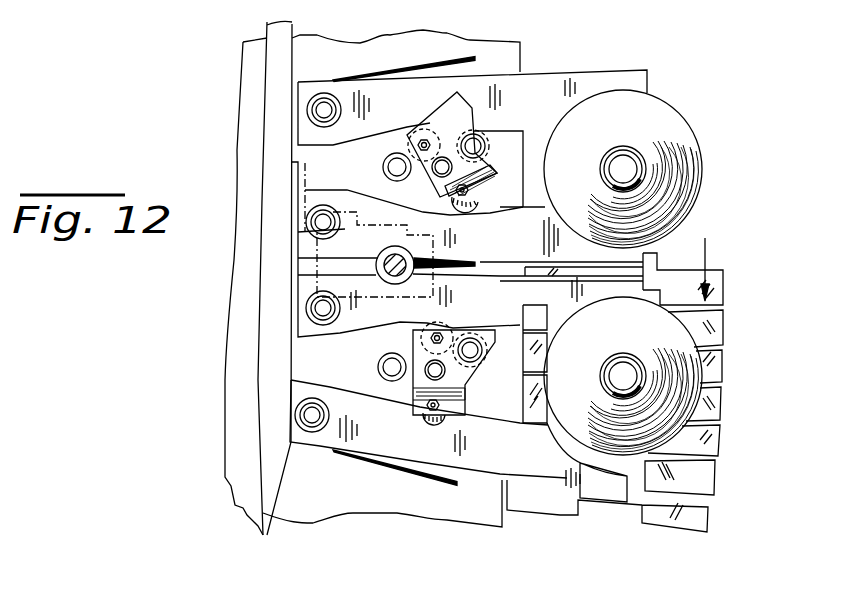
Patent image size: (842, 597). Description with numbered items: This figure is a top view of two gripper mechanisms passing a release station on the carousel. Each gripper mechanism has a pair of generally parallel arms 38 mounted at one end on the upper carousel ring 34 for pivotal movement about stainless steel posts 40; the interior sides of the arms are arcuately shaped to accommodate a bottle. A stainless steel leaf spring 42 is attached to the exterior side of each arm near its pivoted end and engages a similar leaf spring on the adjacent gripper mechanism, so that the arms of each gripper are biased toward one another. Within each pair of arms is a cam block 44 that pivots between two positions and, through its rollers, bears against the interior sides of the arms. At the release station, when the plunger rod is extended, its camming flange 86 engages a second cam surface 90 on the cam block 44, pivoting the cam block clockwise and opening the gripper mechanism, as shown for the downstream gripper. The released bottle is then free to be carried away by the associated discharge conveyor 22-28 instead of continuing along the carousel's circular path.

The upper carousel ring 34 is at (478, 515).
The arms 38 is at (640, 81).
The stainless steel posts 40 is at (312, 110).
The leaf spring 42 is at (453, 59).
The cam block 44 is at (460, 107).
The camming flange 86 is at (412, 256).
The second cam surface 90 is at (404, 192).
The discharge conveyors 22-28 is at (705, 438).